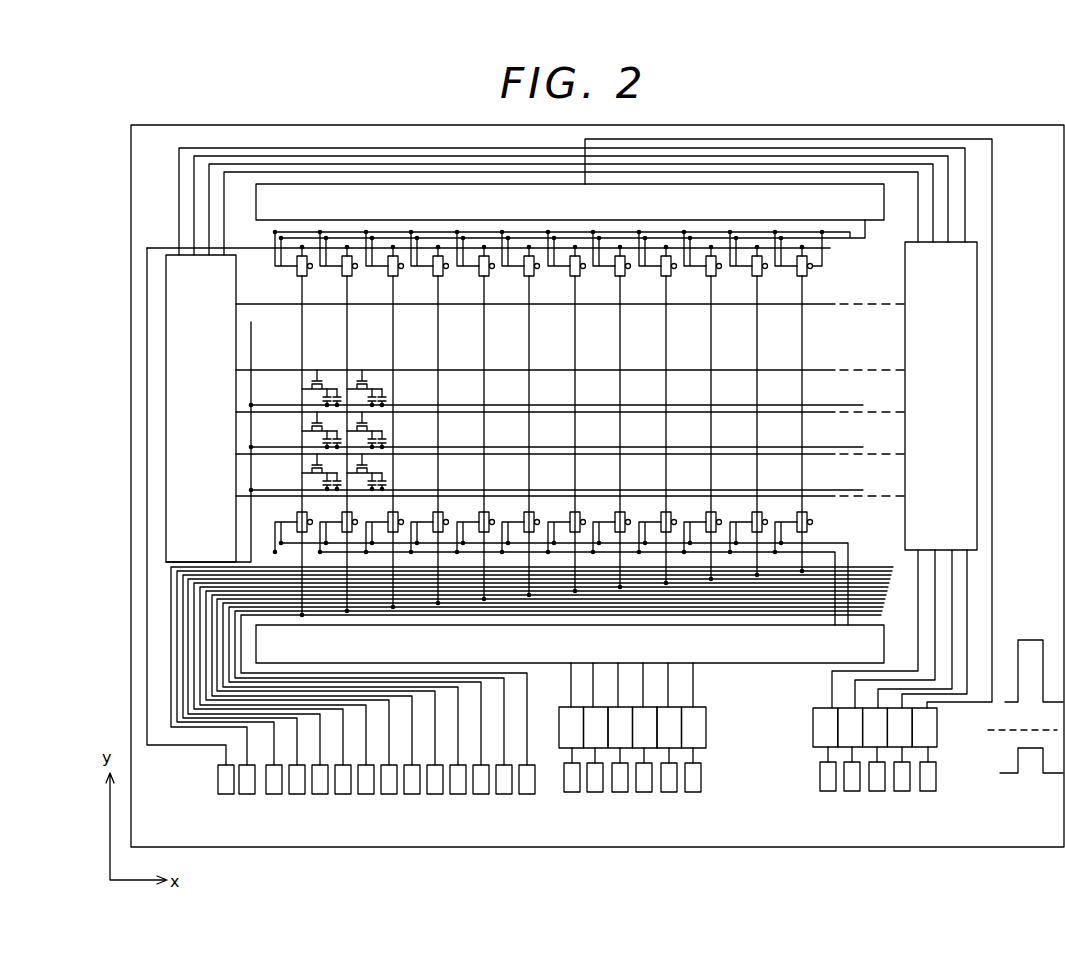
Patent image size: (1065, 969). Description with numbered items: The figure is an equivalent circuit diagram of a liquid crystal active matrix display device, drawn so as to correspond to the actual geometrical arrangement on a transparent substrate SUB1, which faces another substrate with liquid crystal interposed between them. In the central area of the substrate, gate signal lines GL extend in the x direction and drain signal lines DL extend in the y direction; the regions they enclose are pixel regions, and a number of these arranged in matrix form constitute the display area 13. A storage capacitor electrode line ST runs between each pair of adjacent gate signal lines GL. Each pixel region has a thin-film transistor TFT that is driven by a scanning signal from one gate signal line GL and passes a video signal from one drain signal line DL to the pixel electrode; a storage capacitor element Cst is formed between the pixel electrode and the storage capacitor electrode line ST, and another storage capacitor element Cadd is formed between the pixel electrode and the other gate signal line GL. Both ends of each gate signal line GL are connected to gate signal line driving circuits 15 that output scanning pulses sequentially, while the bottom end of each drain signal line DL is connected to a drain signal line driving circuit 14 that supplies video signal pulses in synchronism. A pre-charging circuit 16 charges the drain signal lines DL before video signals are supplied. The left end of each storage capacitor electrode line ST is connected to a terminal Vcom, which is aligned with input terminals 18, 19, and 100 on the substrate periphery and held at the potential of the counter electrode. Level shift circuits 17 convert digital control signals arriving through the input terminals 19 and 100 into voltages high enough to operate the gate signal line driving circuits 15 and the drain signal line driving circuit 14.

The display area 13 is at (730, 336).
The drain signal line driving circuit 14 is at (570, 644).
The gate signal line driving circuit 15 is at (571, 402).
The pre-charging circuit 16 is at (570, 202).
The level shift circuit 17 is at (813, 728).
The input terminal 18 is at (535, 800).
The input terminal 19 is at (703, 800).
The input terminal 100 is at (936, 800).
The drain signal line DL is at (300, 299).
The gate signal line GL is at (285, 371).
The storage capacitor electrode line ST is at (823, 443).
The thin-film transistor TFT is at (318, 378).
The storage capacitor element Cst is at (375, 395).
The storage capacitor element Cadd is at (383, 404).
The terminal Vcom is at (247, 795).
The transparent substrate SUB1 is at (885, 848).